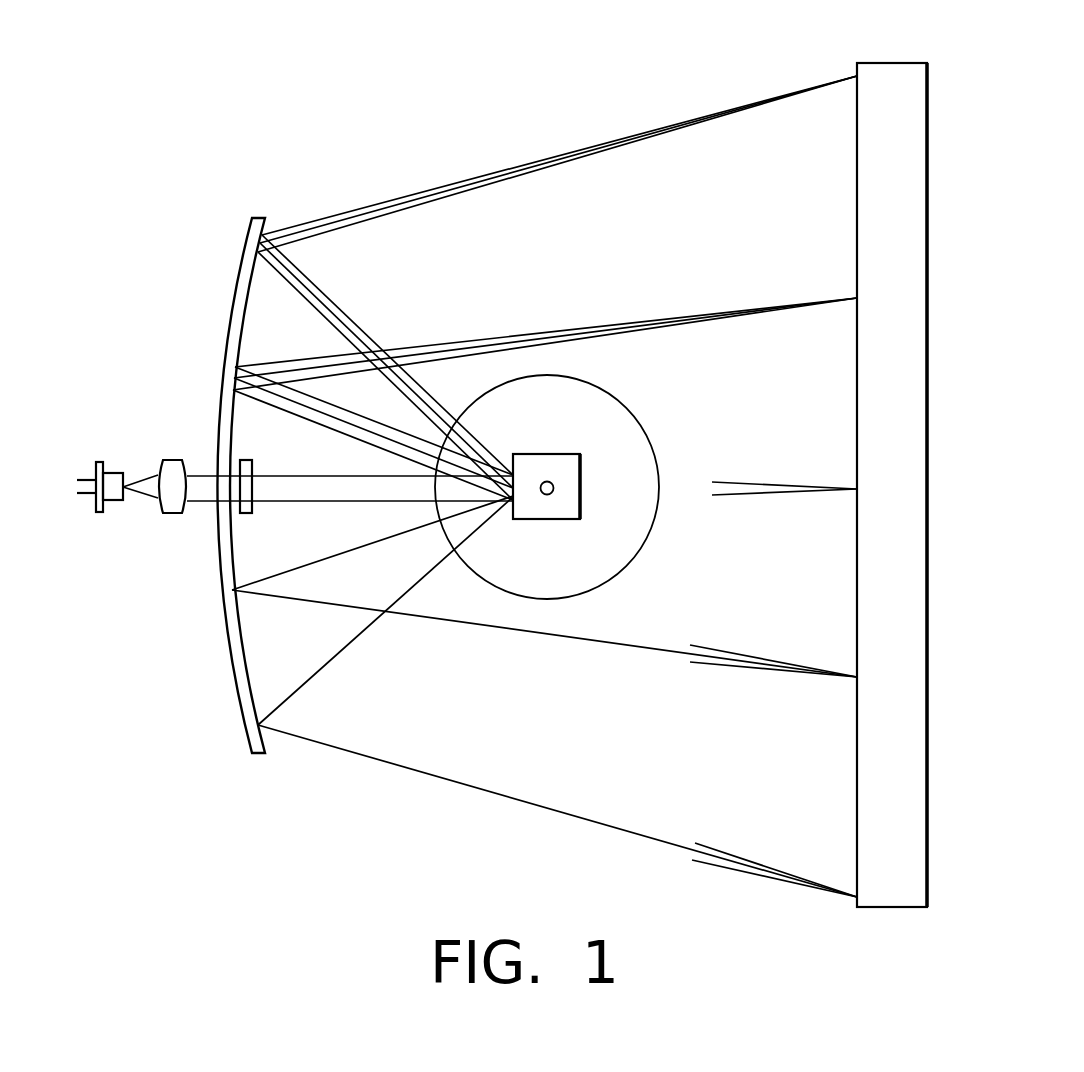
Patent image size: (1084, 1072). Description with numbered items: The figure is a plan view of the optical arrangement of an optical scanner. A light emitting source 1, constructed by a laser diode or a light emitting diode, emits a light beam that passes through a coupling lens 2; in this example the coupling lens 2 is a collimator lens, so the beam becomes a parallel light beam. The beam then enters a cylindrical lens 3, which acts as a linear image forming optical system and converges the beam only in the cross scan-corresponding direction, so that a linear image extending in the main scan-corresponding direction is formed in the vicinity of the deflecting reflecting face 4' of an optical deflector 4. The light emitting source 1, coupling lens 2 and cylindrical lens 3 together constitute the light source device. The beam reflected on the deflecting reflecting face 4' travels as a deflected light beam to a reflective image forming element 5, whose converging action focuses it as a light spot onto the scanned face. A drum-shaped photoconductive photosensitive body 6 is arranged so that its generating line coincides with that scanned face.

The light emitting source 1 is at (112, 476).
The coupling lens 2 is at (168, 514).
The cylindrical lens 3 is at (247, 514).
The optical deflector 4 is at (559, 487).
The deflecting reflecting face 4' is at (546, 453).
The reflective image forming element 5 is at (258, 216).
The photoconductive photosensitive body 6 is at (893, 70).